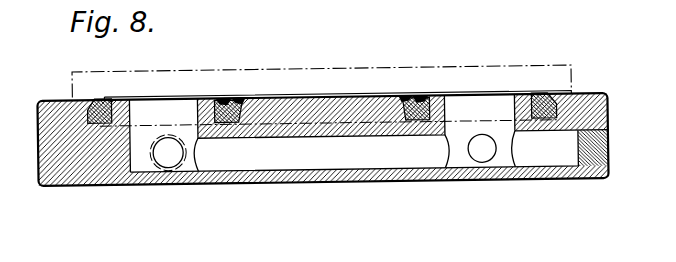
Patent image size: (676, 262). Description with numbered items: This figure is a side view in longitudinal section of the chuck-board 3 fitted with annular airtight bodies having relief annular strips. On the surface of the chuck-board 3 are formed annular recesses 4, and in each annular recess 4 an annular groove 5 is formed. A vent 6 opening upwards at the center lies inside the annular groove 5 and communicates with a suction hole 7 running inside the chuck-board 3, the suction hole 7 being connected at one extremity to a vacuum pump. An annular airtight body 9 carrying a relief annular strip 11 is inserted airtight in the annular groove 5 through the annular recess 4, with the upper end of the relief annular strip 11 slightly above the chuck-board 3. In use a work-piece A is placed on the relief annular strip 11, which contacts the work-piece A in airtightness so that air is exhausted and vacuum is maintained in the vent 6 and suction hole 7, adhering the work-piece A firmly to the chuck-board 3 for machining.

The chuck-board 3 is at (352, 108).
The annular recess 4 is at (106, 98).
The annular groove 5 is at (92, 112).
The vent 6 is at (130, 118).
The suction hole 7 is at (233, 152).
The annular airtight body 9 is at (243, 101).
The relief annular strip 11 is at (222, 101).
The work-piece A is at (308, 68).